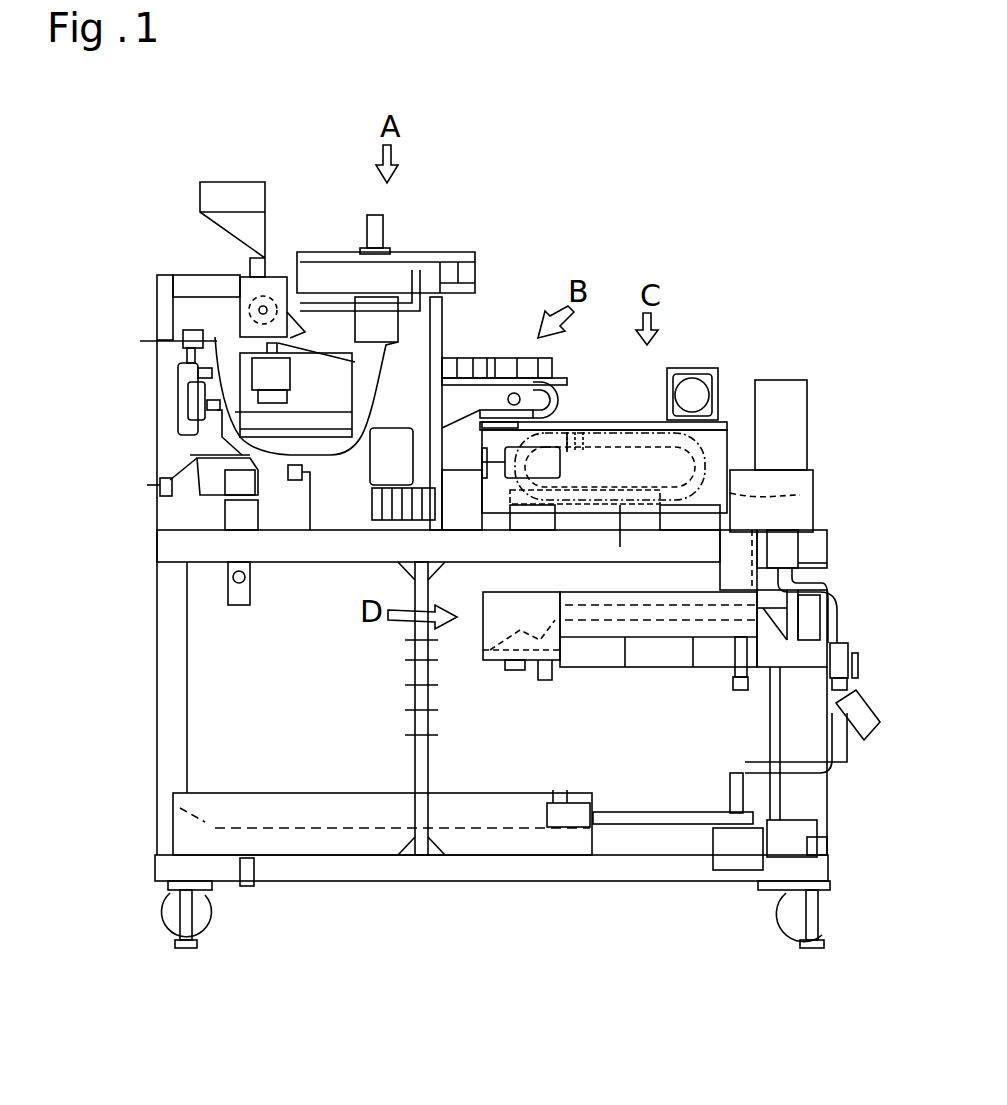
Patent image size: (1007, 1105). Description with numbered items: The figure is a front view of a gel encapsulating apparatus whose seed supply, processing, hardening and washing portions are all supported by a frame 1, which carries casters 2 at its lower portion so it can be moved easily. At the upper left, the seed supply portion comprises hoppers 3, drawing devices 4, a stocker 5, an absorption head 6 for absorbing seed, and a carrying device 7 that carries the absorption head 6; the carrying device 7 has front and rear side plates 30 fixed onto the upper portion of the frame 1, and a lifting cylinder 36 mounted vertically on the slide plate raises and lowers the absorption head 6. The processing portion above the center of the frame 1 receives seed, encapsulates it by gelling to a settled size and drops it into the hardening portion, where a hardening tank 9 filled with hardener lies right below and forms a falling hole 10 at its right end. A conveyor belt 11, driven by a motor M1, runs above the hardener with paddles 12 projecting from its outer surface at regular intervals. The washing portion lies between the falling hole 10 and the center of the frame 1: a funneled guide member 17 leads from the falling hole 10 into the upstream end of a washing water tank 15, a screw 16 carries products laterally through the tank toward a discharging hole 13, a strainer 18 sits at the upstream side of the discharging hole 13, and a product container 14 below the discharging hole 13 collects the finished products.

The frame 1 is at (348, 868).
The casters 2 is at (208, 928).
The hoppers 3 is at (265, 182).
The drawing devices 4 is at (240, 300).
The stocker 5 is at (320, 363).
The absorption head 6 is at (442, 322).
The carrying device 7 is at (473, 225).
The hardening tank 9 is at (732, 442).
The falling hole 10 is at (800, 497).
The conveyor belt 11 is at (612, 432).
The paddles 12 is at (590, 422).
The discharging hole 13 is at (508, 662).
The product container 14 is at (268, 790).
The washing water tank 15 is at (610, 640).
The screw 16 is at (660, 625).
The funneled guide member 17 is at (752, 562).
The strainer 18 is at (483, 650).
The side plates 30 is at (475, 278).
The lifting cylinder 36 is at (383, 228).
The motor M1 is at (700, 368).